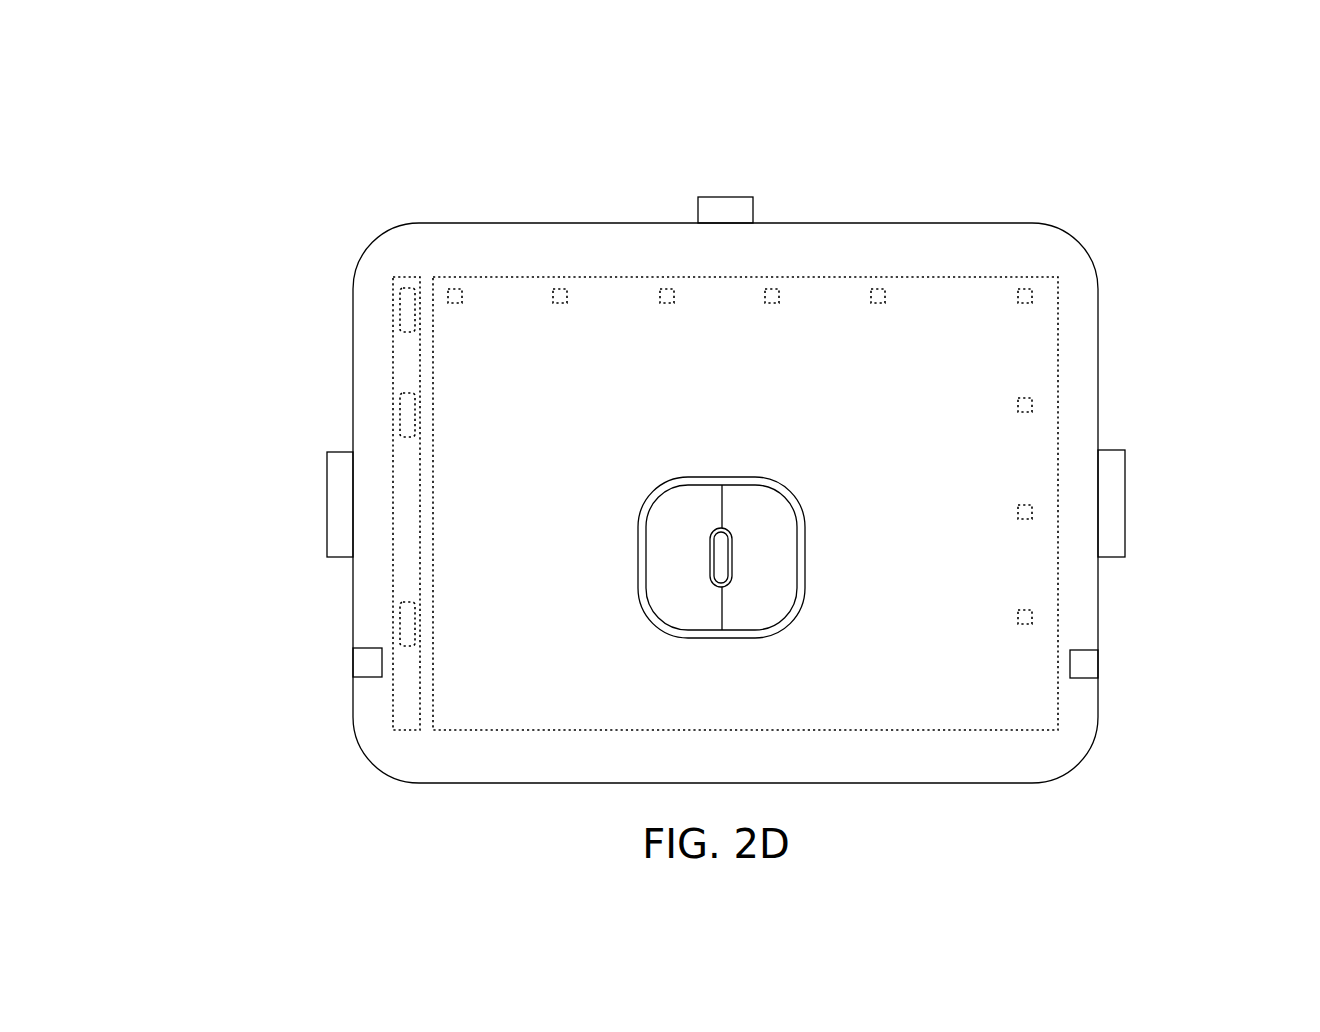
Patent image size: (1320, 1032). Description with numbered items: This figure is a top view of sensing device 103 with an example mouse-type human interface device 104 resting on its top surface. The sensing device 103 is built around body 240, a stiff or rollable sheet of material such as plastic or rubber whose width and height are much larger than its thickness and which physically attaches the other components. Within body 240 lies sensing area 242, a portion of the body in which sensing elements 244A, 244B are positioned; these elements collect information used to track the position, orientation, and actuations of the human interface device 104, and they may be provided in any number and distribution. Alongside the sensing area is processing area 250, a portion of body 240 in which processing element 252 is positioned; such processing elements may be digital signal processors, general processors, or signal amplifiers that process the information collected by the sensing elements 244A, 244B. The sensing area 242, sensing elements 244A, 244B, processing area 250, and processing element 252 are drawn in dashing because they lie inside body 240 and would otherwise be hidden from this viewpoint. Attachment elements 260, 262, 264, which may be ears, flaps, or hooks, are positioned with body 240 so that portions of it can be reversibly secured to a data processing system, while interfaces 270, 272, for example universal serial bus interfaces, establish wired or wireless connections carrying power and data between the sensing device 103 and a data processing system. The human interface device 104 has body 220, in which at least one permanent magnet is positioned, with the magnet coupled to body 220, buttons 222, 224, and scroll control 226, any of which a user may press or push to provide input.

The sensing device 103 is at (320, 212).
The human interface device 104 is at (635, 635).
The body 220 is at (765, 485).
The button 222 is at (665, 512).
The button 224 is at (772, 518).
The scroll control 226 is at (713, 545).
The body 240 is at (520, 252).
The sensing area 242 is at (925, 298).
The sensing element 244A is at (662, 295).
The sensing element 244B is at (1032, 405).
The processing area 250 is at (405, 370).
The processing element 252 is at (407, 623).
The attachment element 260 is at (340, 515).
The attachment element 262 is at (727, 213).
The attachment element 264 is at (1113, 505).
The interface 270 is at (367, 667).
The interface 272 is at (1085, 665).